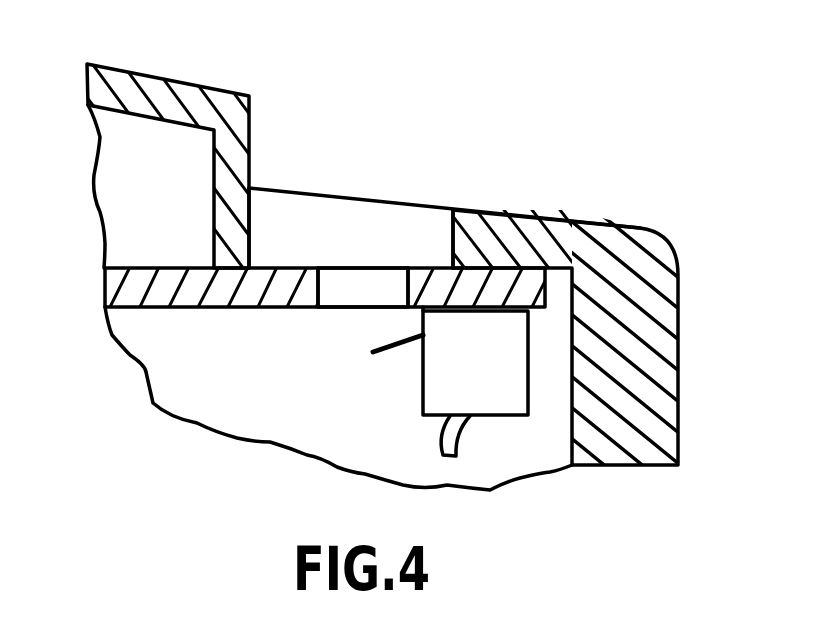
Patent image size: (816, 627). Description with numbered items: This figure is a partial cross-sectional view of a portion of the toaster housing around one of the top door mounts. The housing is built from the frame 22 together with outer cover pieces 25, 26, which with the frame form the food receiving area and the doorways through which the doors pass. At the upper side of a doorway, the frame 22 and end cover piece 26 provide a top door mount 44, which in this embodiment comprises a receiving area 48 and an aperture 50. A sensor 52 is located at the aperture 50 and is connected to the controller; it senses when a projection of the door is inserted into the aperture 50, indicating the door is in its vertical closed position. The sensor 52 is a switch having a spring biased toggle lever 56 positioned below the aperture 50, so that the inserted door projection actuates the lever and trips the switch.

The frame 22 is at (110, 318).
The outer cover piece 25 is at (127, 66).
The outer cover piece 26 is at (652, 245).
The top door mount 44 is at (342, 197).
The receiving area 48 is at (388, 212).
The aperture 50 is at (337, 307).
The sensor 52 is at (497, 407).
The spring biased toggle lever 56 is at (390, 357).